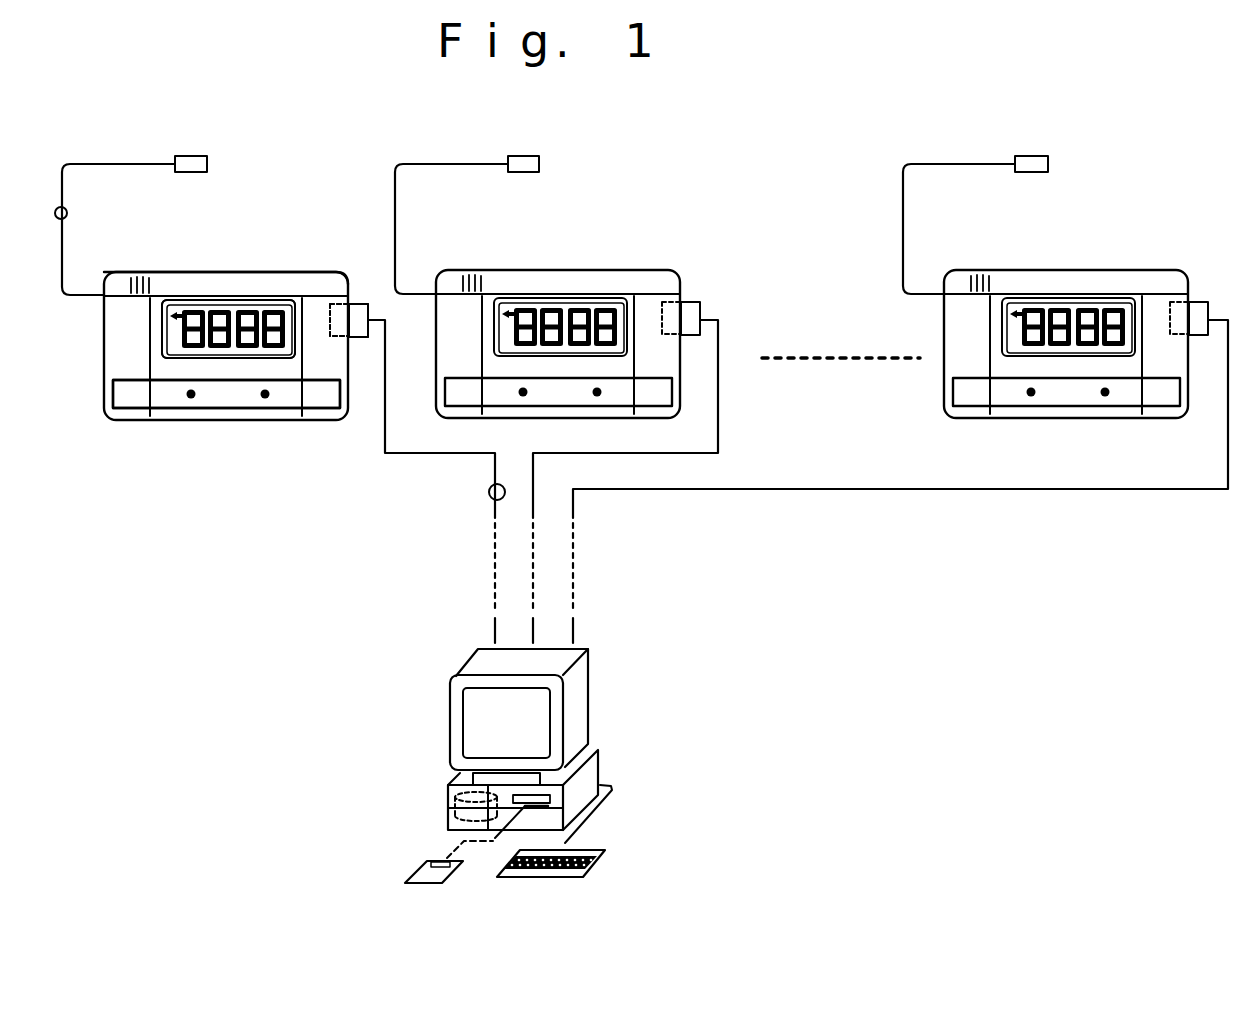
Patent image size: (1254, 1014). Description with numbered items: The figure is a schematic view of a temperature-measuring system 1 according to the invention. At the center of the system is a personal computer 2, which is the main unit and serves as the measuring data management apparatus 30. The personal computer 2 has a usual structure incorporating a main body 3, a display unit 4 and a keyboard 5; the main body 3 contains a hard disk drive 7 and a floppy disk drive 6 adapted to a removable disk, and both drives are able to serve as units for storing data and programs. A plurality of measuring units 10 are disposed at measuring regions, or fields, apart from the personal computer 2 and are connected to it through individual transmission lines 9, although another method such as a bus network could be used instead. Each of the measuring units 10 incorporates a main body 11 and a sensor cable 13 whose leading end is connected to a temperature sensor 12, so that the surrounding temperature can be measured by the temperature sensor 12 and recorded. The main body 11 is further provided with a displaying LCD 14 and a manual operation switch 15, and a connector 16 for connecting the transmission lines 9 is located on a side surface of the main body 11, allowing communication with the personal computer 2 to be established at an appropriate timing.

The temperature-measuring system 1 is at (647, 481).
The personal computer 2 is at (515, 766).
The main body 3 is at (580, 798).
The display unit 4 is at (580, 673).
The keyboard 5 is at (600, 858).
The floppy disk drive 6 is at (425, 863).
The hard disk drive 7 is at (448, 797).
The transmission lines 9 is at (488, 490).
The measuring units 10 is at (647, 277).
The main body 11 is at (185, 277).
The temperature sensor 12 is at (193, 157).
The sensor cable 13 is at (68, 212).
The displaying LCD 14 is at (290, 300).
The manual operation switch 15 is at (222, 396).
The connector 16 is at (353, 302).
The measuring data management apparatus 30 is at (547, 766).